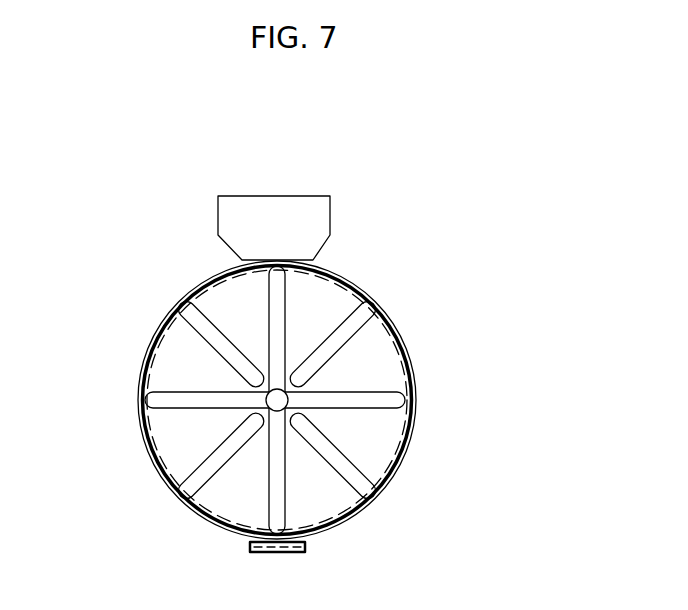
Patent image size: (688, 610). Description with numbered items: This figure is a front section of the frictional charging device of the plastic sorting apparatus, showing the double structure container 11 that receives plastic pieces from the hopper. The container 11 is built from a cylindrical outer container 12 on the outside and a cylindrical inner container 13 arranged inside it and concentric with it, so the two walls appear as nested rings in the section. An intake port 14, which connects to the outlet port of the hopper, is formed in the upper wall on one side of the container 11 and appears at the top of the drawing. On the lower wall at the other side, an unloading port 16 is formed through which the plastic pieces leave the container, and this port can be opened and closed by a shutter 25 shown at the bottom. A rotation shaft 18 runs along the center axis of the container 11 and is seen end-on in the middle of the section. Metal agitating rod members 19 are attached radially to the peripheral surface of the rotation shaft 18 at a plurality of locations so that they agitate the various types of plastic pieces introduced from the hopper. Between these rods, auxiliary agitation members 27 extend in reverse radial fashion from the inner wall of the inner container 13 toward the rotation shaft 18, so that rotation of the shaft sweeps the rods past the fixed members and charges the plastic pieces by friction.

The container 11 is at (505, 343).
The outer container 12 is at (403, 349).
The inner container 13 is at (410, 393).
The intake port 14 is at (286, 268).
The unloading port 16 is at (266, 554).
The rotation shaft 18 is at (337, 305).
The agitating rod members 19 is at (265, 389).
The shutter 25 is at (283, 553).
The auxiliary agitation members 27 is at (292, 405).